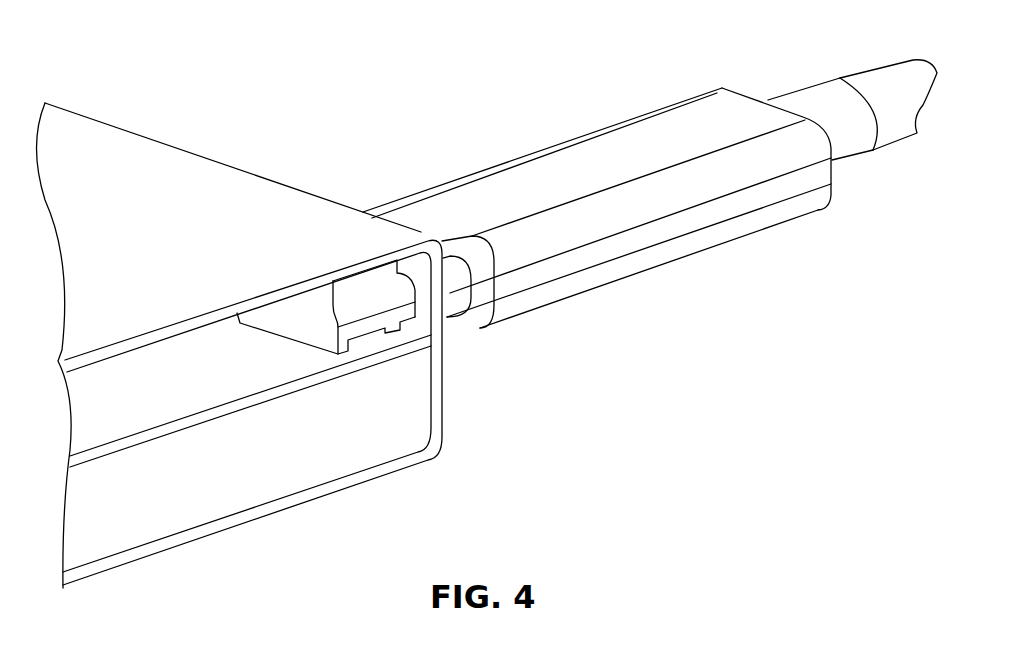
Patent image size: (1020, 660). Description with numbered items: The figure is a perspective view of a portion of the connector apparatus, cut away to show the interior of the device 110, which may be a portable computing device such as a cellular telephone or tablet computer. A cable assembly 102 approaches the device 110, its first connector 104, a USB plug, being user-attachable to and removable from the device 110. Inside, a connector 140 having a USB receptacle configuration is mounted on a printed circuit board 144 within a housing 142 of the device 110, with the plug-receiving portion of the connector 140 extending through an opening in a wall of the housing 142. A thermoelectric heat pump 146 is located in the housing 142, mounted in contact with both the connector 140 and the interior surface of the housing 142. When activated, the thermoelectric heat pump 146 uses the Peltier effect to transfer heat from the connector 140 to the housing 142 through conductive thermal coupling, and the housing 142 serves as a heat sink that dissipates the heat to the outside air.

The portable computing device 110 is at (229, 108).
The cable assembly 102 is at (532, 111).
The first connector 104 is at (660, 265).
The housing 142 is at (308, 186).
The printed circuit board 144 is at (305, 380).
The thermoelectric heat pump 146 is at (373, 278).
The connector 140 is at (365, 328).